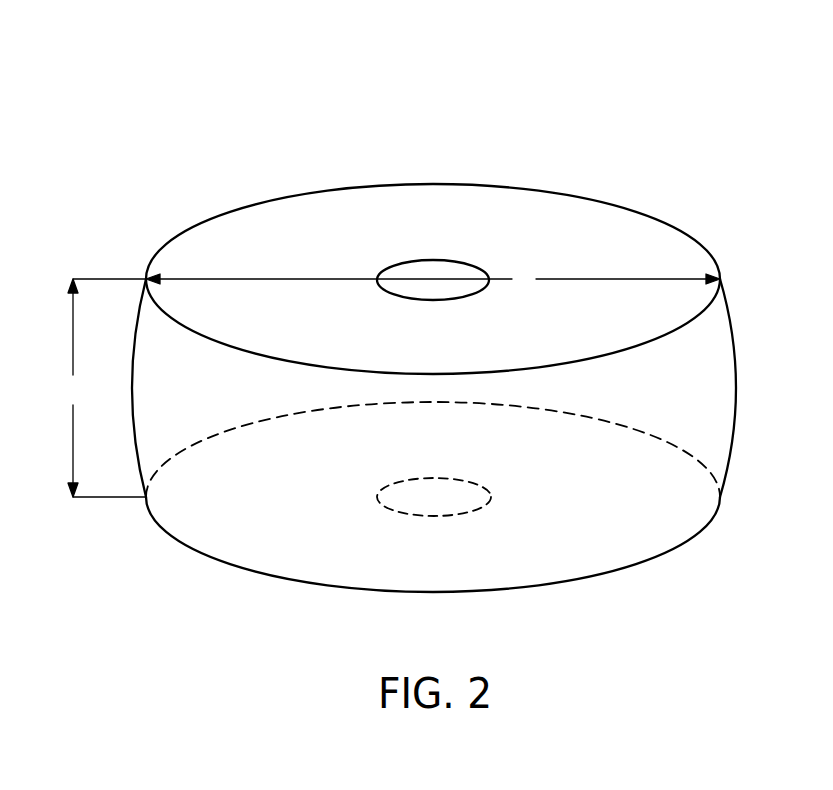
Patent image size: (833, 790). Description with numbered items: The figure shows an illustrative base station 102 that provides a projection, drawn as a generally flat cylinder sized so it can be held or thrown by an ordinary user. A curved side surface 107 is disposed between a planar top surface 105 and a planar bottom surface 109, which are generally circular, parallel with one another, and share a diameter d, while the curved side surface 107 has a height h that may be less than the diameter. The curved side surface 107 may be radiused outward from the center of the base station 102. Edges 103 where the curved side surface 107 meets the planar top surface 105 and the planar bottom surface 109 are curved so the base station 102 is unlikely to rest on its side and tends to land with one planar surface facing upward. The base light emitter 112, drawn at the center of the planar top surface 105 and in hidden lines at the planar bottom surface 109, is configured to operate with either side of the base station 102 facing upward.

The base station 102 is at (208, 133).
The edges 103 is at (208, 338).
The planar top surface 105 is at (563, 216).
The curved side surface 107 is at (737, 385).
The planar bottom surface 109 is at (577, 552).
The base light emitter 112 is at (393, 263).